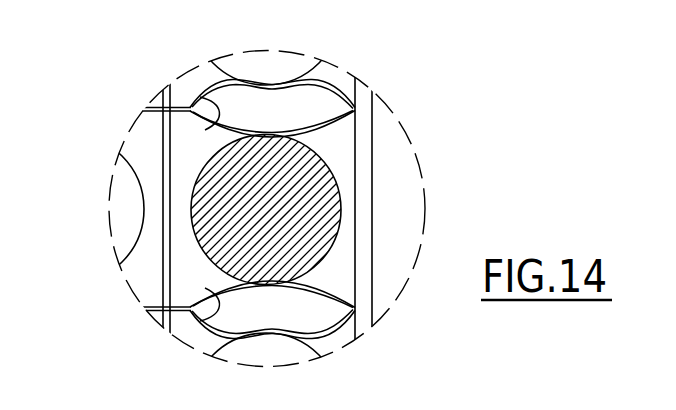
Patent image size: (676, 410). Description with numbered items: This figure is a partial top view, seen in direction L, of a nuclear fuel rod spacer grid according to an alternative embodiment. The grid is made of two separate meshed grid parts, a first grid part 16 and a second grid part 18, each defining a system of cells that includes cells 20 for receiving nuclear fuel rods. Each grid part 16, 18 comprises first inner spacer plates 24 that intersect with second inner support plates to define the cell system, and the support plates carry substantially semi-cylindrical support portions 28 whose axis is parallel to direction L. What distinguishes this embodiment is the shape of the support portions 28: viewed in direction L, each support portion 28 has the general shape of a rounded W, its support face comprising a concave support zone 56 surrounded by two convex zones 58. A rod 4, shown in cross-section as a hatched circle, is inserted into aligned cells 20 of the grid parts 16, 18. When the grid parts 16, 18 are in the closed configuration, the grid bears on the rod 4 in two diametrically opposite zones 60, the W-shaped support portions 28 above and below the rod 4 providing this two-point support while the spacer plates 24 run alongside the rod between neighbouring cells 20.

The rod 4 is at (307, 196).
The first grid part 16 is at (186, 293).
The second grid part 18 is at (150, 99).
The cell 20 is at (177, 192).
The first inner spacer plate 24 is at (167, 318).
The support portion 28 is at (200, 97).
The concave support zone 56 is at (262, 132).
The convex zone 58 is at (214, 139).
The bearing zone 60 is at (281, 136).